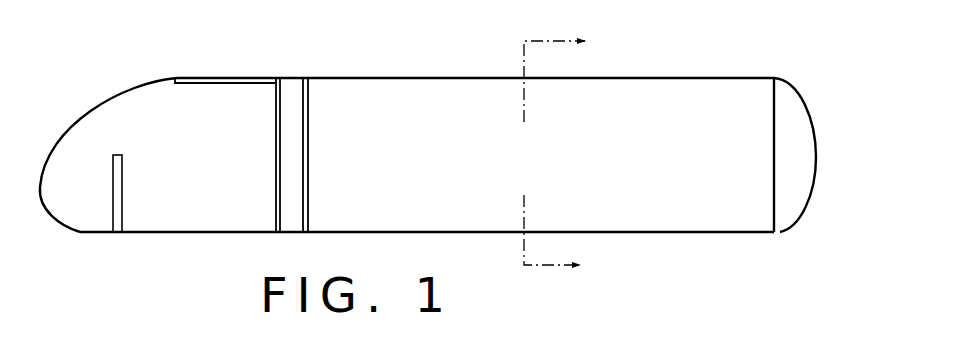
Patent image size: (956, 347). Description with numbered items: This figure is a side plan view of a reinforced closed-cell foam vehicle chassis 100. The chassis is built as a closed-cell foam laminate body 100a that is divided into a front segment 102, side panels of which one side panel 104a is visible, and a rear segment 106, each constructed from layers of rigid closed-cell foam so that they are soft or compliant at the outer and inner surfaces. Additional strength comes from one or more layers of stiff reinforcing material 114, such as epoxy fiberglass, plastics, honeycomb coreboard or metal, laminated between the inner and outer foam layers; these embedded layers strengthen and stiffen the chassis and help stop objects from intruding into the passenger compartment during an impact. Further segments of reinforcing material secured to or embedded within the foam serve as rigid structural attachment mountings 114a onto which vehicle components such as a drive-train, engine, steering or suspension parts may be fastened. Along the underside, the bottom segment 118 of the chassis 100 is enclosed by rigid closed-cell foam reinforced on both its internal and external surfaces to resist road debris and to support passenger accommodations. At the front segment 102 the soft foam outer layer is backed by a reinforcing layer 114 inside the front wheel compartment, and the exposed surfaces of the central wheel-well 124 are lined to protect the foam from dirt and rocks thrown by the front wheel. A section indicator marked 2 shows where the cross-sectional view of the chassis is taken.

The vehicle chassis 100 is at (436, 163).
The closed-cell foam laminate body 100a is at (462, 187).
The front segment 102 is at (182, 188).
The side panel 104a is at (658, 187).
The rear segment 106 is at (797, 135).
The reinforcing material layer 114 is at (122, 168).
The structural attachment mounting 114a is at (219, 69).
The bottom segment 118 is at (479, 256).
The central wheel-well 124 is at (243, 189).
The section line 2- 2 is at (567, 154).